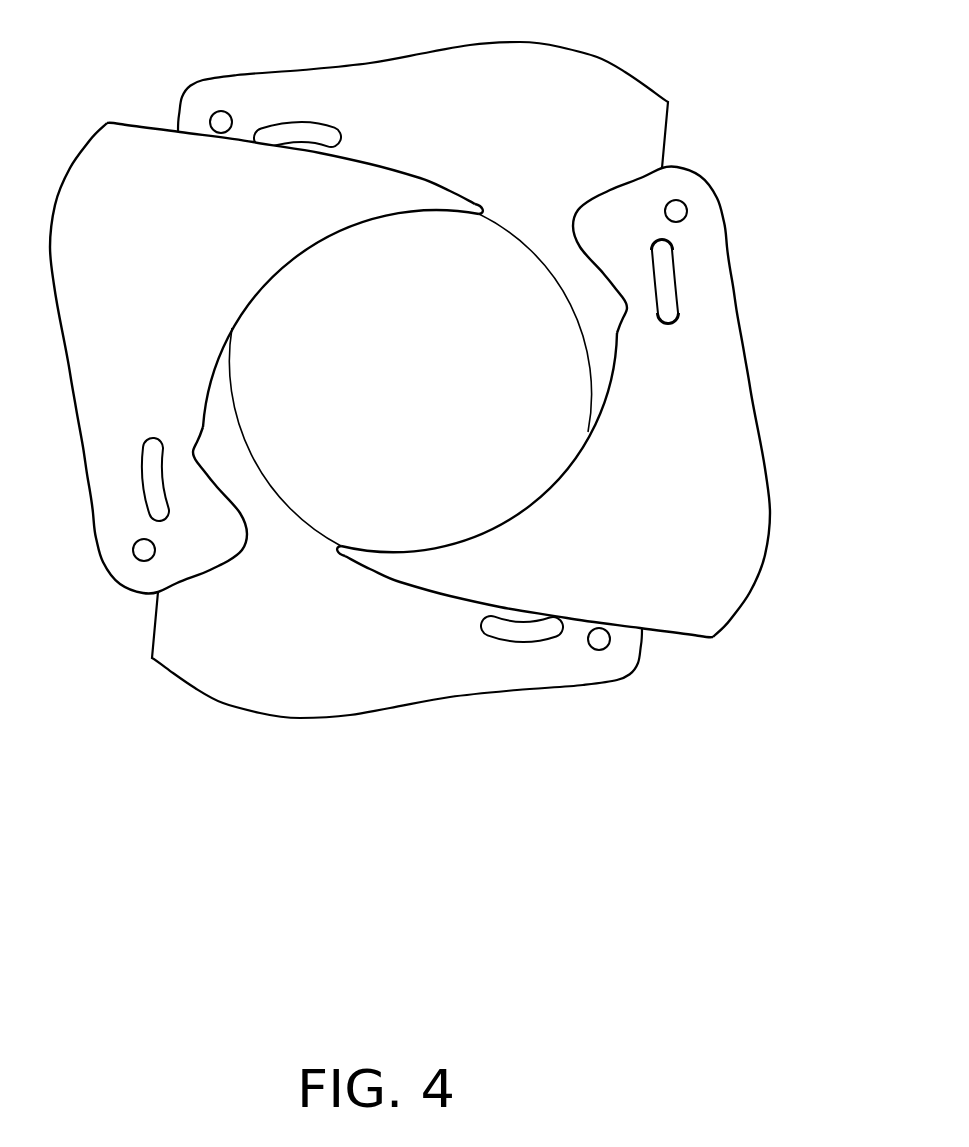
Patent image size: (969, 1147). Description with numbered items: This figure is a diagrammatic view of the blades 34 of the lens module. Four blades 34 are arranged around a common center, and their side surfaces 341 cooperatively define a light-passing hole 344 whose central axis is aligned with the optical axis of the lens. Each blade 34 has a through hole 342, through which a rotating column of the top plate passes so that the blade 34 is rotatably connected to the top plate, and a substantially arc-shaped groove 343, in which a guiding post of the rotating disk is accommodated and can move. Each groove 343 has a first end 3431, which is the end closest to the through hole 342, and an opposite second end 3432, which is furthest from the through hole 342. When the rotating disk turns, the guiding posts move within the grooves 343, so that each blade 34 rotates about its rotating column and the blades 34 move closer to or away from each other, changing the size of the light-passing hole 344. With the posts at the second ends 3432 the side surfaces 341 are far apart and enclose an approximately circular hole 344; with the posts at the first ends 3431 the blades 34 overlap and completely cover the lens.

The blade 34 is at (590, 480).
The side surface 341 is at (548, 475).
The through hole 342 is at (687, 210).
The groove 343 is at (672, 290).
The first end 3431 is at (670, 250).
The second end 3432 is at (669, 316).
The light-passing hole 344 is at (403, 222).